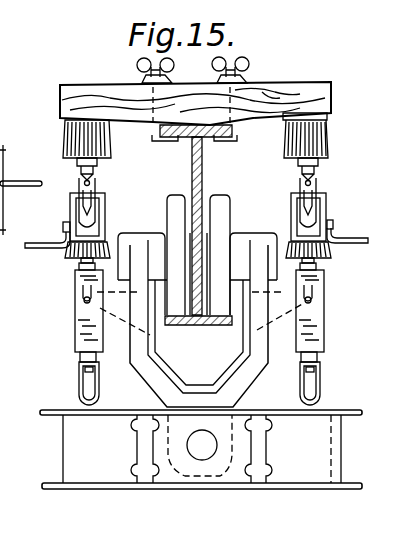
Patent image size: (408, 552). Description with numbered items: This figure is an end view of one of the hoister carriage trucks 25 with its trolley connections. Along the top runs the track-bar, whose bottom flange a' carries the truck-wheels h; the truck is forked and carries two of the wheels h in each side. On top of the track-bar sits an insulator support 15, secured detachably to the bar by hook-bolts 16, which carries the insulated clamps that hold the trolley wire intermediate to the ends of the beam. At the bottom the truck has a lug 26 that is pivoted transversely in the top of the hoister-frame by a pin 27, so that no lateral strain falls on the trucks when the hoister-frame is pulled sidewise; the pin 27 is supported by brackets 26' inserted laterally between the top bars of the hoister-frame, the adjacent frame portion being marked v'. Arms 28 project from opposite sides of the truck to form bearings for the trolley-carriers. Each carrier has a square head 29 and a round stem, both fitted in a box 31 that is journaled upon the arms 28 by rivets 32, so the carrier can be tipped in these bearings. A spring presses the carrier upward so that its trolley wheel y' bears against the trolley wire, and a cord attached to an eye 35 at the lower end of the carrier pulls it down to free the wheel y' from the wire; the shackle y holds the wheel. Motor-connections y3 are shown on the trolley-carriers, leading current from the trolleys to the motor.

The insulator support 15 is at (83, 87).
The hook-bolts 16 is at (239, 97).
The bottom flange a' is at (195, 241).
The truck-wheels h is at (175, 194).
The hoister carriage truck 25 is at (168, 368).
The shackle y is at (106, 192).
The trolley wheel y' is at (102, 215).
The motor-connections y3 is at (35, 246).
The square head 29 is at (78, 266).
The arms 28 is at (120, 317).
The eye 35 is at (78, 385).
The rivets 32 is at (80, 286).
The box 31 is at (322, 320).
The lug 26 is at (201, 471).
The brackets 26' is at (201, 476).
The pin 27 is at (207, 453).
The base end v' is at (318, 468).